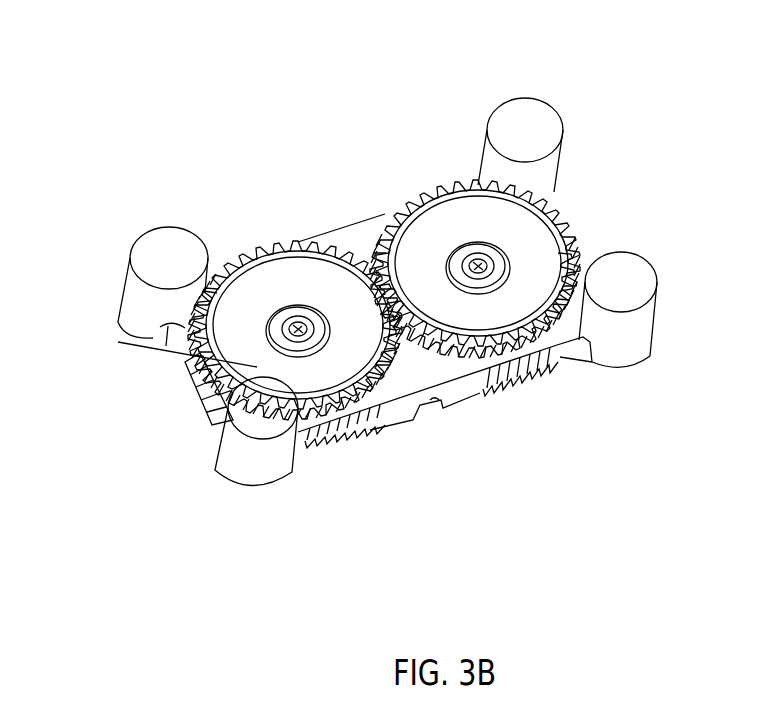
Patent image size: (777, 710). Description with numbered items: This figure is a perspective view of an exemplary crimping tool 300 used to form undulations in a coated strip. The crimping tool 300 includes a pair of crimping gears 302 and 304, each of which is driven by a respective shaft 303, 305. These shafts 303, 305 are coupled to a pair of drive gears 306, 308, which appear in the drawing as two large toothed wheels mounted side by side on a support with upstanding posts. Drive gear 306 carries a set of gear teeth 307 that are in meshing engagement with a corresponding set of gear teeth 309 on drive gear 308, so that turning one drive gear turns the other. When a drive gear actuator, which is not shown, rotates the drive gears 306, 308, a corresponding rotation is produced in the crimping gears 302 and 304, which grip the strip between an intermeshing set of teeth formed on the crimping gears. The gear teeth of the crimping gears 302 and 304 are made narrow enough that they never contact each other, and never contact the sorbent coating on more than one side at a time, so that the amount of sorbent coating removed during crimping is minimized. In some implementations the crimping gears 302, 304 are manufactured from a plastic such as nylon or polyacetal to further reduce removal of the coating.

The crimping tool 300 is at (556, 86).
The crimping gear 302 is at (537, 377).
The shaft 303 is at (470, 258).
The crimping gear 304 is at (193, 390).
The shaft 305 is at (292, 322).
The drive gear 306 is at (545, 270).
The gear teeth 307 is at (468, 357).
The drive gear 308 is at (260, 363).
The gear teeth 309 is at (400, 334).